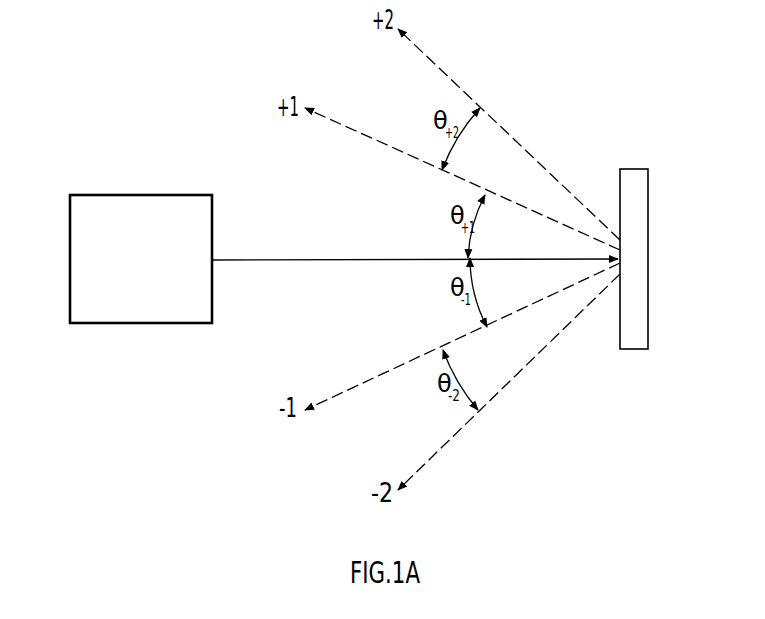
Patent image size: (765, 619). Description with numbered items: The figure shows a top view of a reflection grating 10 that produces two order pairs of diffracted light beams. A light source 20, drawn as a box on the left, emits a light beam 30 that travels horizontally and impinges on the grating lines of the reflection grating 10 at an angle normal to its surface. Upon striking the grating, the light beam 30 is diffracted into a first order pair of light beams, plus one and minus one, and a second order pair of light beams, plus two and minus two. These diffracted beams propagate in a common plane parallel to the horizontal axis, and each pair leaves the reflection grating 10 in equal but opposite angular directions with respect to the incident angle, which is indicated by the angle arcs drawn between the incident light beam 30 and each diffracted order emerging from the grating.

The reflection grating 10 is at (632, 350).
The light source 20 is at (176, 324).
The light beam 30 is at (325, 261).